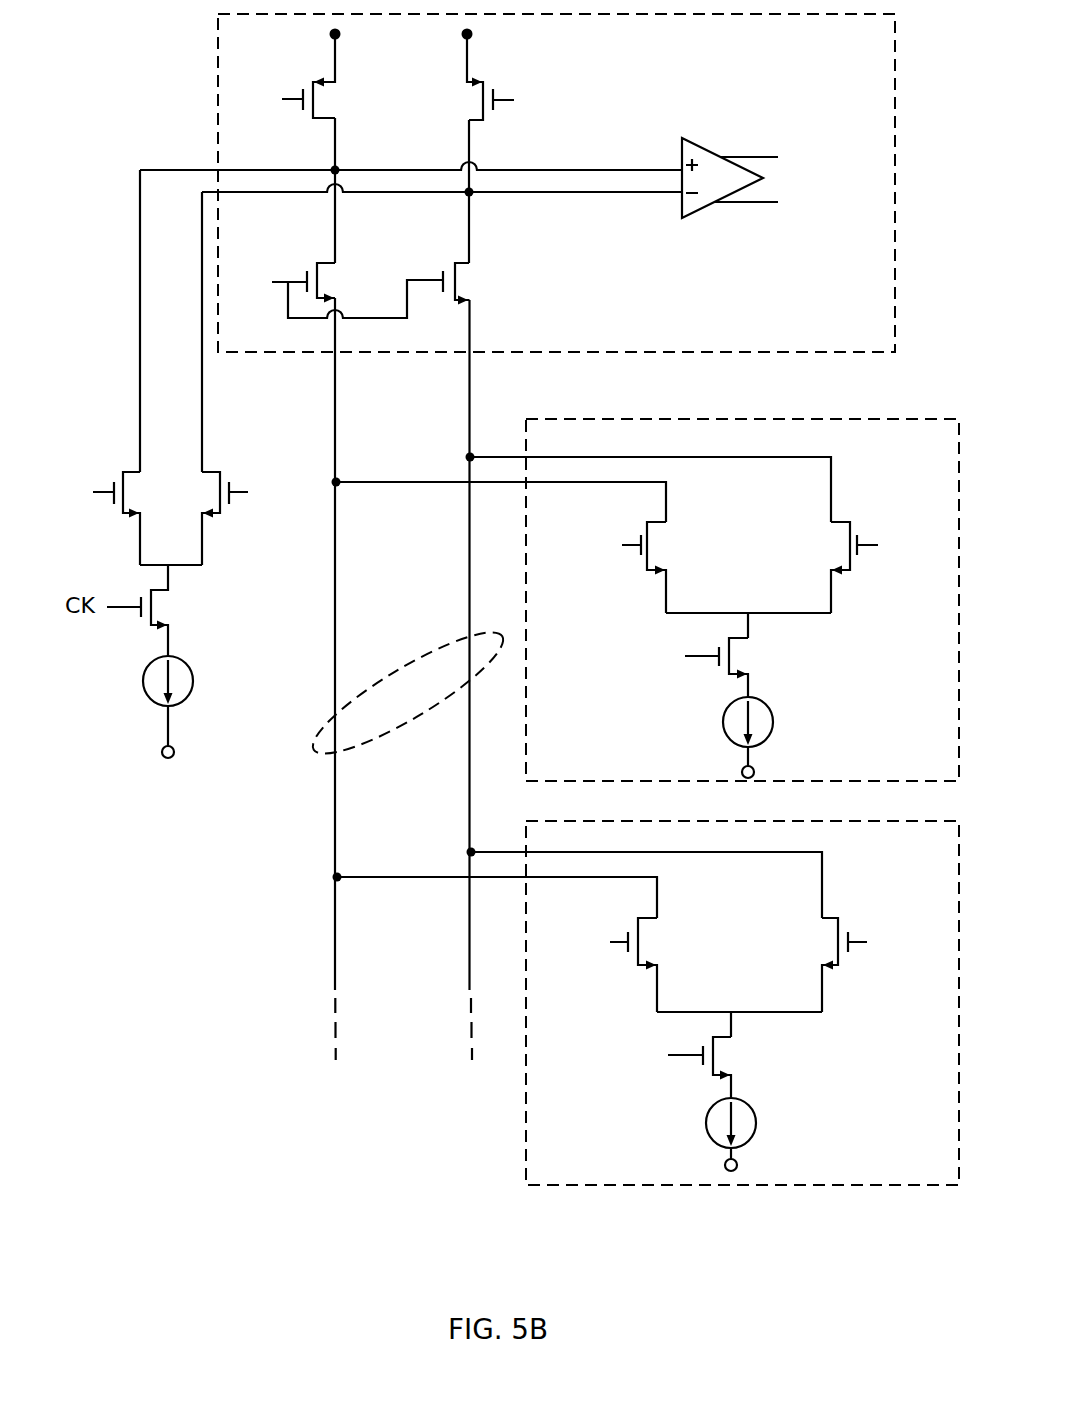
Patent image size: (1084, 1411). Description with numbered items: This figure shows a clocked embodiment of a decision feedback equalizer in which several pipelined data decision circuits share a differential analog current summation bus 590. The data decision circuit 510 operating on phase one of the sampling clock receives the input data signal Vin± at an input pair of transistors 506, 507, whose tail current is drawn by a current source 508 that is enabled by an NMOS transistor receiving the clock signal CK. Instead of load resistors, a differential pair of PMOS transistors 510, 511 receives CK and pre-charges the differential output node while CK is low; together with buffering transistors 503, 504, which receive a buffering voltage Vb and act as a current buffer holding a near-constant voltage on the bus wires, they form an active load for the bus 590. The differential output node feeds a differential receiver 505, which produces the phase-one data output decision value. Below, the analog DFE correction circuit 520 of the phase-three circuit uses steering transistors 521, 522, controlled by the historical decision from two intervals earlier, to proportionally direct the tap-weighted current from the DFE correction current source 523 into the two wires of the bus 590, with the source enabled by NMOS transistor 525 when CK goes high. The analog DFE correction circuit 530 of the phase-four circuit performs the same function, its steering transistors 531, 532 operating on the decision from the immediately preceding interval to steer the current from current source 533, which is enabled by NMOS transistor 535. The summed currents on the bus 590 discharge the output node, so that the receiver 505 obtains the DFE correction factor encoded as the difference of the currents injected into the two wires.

The buffering transistor 503 is at (338, 261).
The buffering transistor 504 is at (467, 261).
The differential receiver 505 is at (703, 147).
The input transistor 506 is at (131, 515).
The input transistor 507 is at (215, 515).
The current source 508 is at (145, 695).
The data decision circuit / PMOS transistor 510 is at (324, 82).
The PMOS transistor 511 is at (465, 82).
The analog DFE correction circuit 520 is at (788, 418).
The steering transistor 521 is at (668, 522).
The steering transistor 522 is at (829, 522).
The DFE correction current source 523 is at (722, 738).
The NMOS transistor 525 is at (745, 635).
The analog DFE correction circuit 530 is at (805, 820).
The steering transistor 531 is at (659, 918).
The steering transistor 532 is at (820, 918).
The current source 533 is at (713, 1142).
The NMOS transistor 535 is at (732, 1028).
The differential analog current summation bus 590 is at (320, 733).